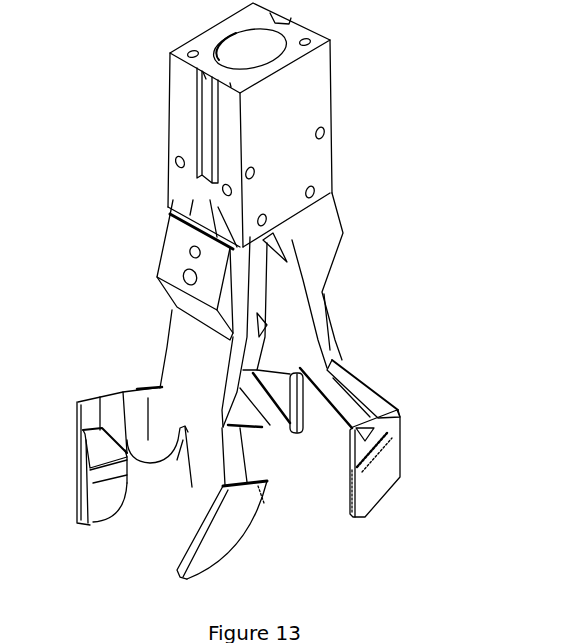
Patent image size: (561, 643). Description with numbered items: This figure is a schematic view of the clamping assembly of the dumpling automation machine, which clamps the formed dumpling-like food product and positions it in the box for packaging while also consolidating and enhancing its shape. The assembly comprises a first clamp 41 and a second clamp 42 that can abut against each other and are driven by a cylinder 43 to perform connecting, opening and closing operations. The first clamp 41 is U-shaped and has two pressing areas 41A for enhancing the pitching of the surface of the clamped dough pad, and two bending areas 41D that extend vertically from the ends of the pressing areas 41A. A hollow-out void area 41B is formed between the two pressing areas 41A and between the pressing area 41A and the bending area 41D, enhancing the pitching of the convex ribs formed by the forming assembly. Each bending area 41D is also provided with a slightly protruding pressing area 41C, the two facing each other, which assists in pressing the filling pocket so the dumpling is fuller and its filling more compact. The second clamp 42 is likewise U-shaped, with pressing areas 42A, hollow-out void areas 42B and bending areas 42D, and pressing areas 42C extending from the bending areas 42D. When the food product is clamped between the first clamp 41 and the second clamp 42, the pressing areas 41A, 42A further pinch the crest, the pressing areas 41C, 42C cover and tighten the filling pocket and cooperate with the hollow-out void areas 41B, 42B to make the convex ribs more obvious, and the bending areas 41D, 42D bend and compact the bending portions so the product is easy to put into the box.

The cylinder 43 is at (306, 97).
The first clamp 41 is at (178, 352).
The pressing area 41A is at (140, 387).
The hollow-out void area 41B is at (177, 470).
The pressing area 41C is at (95, 507).
The bending area 41D is at (203, 562).
The second clamp 42 is at (320, 330).
The pressing area 42A is at (340, 402).
The hollow-out void area 42B is at (298, 380).
The pressing area 42C is at (282, 423).
The bending area 42D is at (353, 520).